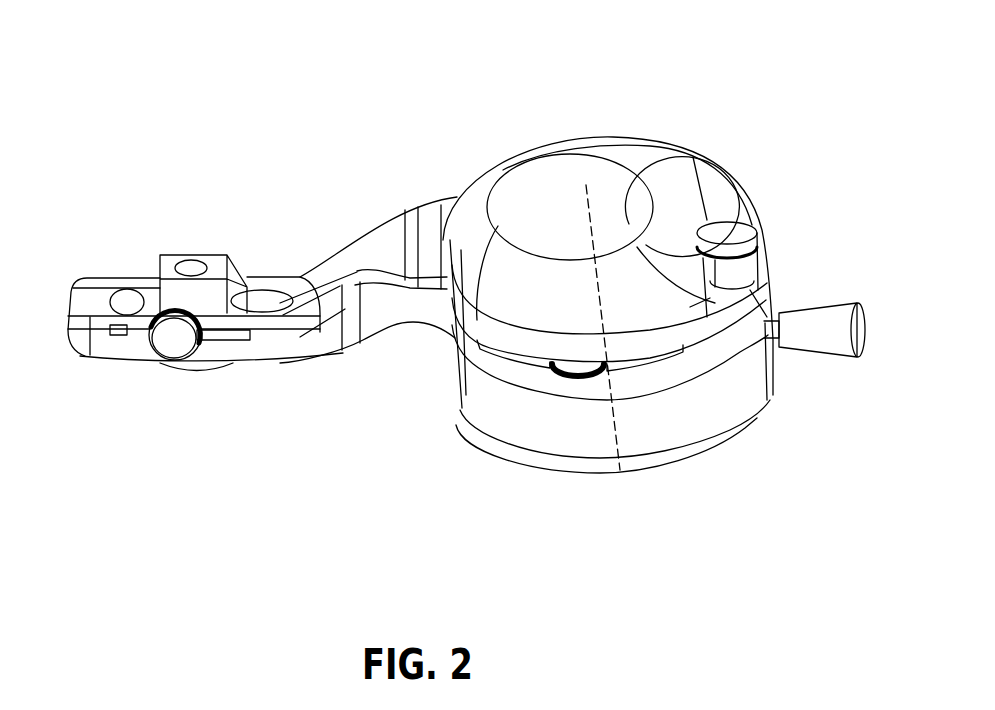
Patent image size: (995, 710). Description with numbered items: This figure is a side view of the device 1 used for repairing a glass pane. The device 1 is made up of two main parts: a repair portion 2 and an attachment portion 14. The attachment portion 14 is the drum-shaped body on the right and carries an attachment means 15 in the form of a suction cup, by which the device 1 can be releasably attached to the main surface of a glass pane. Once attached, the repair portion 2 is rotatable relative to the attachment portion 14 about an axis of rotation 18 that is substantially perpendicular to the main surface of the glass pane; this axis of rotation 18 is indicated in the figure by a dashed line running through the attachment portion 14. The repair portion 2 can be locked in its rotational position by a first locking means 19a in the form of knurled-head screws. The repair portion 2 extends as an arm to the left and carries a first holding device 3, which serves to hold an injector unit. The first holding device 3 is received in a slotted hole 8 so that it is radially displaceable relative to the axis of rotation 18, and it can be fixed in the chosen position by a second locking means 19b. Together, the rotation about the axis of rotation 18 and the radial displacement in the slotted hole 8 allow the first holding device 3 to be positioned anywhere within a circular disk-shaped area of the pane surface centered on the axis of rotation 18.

The device 1 is at (345, 107).
The repair portion 2 is at (73, 247).
The first holding device 3 is at (177, 295).
The slotted hole 8 is at (133, 300).
The attachment portion 14 is at (458, 467).
The attachment means 15 is at (757, 422).
The axis of rotation 18 is at (592, 218).
The first locking means 19a is at (552, 367).
The second locking means 19b is at (177, 345).